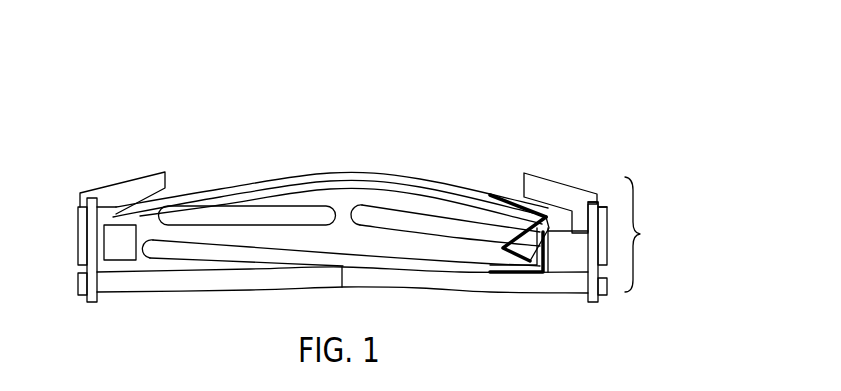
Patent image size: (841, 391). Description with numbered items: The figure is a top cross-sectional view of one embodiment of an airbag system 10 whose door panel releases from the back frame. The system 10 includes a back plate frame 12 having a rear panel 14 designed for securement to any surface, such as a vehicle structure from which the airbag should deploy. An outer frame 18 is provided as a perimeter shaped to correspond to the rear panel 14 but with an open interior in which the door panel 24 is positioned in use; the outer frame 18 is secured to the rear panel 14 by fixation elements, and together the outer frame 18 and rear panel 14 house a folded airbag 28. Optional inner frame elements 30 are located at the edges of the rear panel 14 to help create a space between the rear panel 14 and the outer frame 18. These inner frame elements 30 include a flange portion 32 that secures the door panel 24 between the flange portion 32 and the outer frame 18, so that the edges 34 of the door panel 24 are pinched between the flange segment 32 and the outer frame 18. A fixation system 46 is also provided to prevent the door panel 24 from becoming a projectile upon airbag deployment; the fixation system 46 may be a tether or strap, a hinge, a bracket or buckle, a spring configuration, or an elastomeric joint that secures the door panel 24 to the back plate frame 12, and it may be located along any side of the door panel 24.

The airbag system 10 is at (463, 70).
The back plate frame 12 is at (641, 234).
The rear panel 14 is at (173, 285).
The outer frame 18 is at (537, 174).
The door panel 24 is at (258, 184).
The folded airbag 28 is at (230, 212).
The inner frame elements 30 is at (570, 245).
The flange portion 32 is at (115, 212).
The edges 34 is at (597, 201).
The fixation system 46 is at (503, 273).